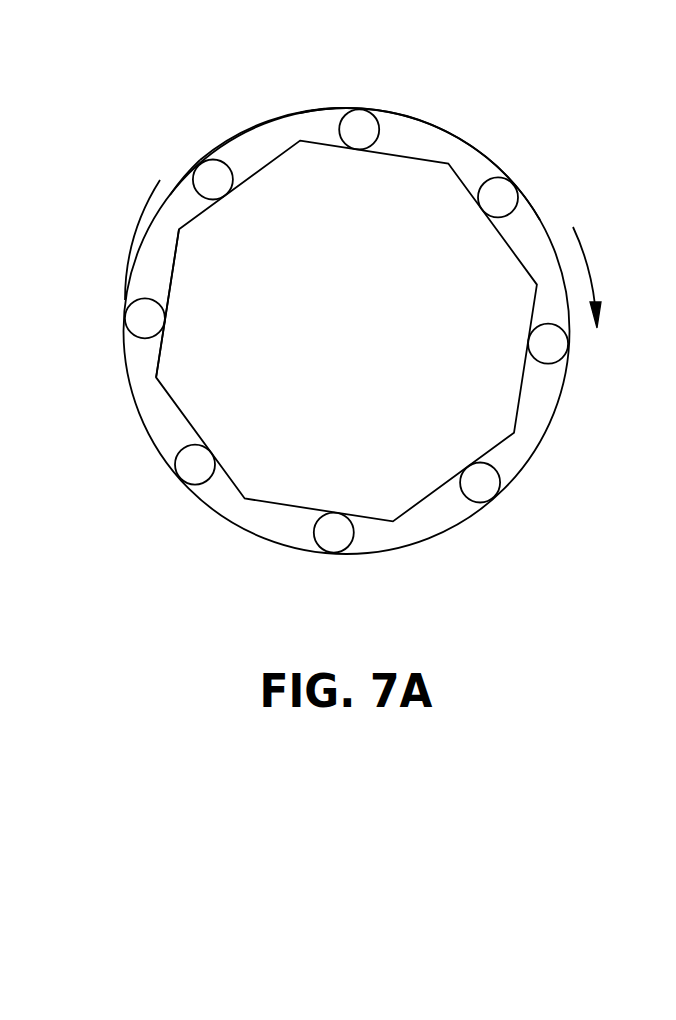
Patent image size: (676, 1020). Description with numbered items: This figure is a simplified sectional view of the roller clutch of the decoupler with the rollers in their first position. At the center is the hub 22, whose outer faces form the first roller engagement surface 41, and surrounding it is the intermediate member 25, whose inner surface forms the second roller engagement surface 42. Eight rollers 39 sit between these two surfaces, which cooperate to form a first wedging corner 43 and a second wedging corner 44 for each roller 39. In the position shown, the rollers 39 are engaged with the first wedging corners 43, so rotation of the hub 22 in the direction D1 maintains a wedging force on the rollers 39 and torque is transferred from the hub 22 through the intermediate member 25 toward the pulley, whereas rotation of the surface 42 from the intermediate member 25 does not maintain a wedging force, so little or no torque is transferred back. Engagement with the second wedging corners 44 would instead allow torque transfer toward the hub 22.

The hub 22 is at (331, 348).
The intermediate member 25 is at (100, 430).
The rollers 39 is at (358, 125).
The first roller engagement surface 41 is at (173, 273).
The second roller engagement surface 42 is at (163, 234).
The first wedging corner 43 is at (328, 128).
The second wedging corner 44 is at (287, 132).
The direction of rotation D1 is at (591, 268).